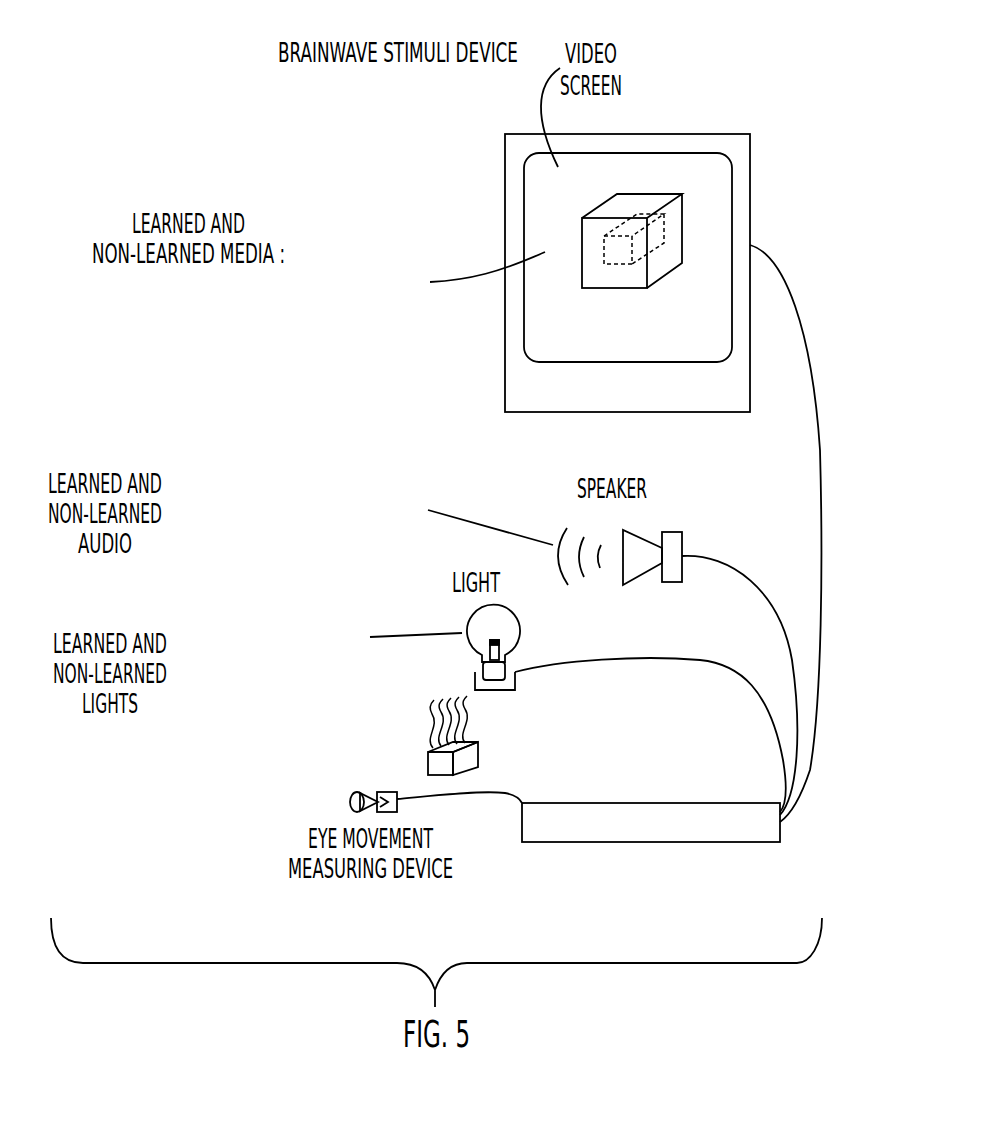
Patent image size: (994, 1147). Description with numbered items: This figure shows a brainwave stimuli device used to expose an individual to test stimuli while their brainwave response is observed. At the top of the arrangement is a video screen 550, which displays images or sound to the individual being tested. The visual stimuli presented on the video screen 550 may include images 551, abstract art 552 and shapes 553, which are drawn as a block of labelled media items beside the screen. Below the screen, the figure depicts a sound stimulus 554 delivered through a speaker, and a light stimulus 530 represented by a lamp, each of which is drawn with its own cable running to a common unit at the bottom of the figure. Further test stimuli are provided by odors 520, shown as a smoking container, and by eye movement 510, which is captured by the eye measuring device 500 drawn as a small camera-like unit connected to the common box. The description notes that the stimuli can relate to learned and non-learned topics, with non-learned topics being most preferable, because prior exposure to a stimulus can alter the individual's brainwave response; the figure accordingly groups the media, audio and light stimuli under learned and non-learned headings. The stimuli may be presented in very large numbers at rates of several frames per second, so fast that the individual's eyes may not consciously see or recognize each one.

The eye measuring device 500 is at (598, 842).
The eye movement 510 is at (348, 800).
The odors 520 is at (317, 751).
The stimuli light 530 is at (300, 656).
The video screen 550 is at (505, 156).
The images 551 is at (340, 265).
The abstract art 552 is at (317, 312).
The shapes 553 is at (345, 343).
The stimuli sound speaker 554 is at (396, 473).